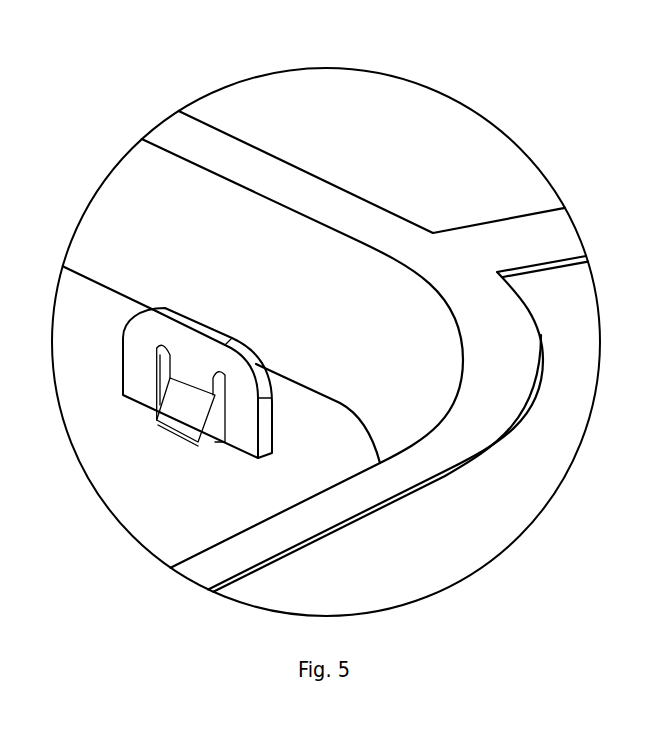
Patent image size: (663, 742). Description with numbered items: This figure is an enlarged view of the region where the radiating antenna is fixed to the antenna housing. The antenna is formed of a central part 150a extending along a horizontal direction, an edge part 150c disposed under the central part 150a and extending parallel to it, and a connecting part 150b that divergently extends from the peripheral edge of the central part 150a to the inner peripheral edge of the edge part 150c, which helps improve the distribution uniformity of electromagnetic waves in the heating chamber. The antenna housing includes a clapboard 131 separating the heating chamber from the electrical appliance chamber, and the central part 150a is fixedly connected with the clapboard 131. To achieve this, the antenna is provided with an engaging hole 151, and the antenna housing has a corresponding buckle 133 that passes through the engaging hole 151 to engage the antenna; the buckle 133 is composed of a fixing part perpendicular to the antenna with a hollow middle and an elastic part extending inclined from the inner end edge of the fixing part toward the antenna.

The clapboard 131 is at (490, 520).
The buckle 133 is at (222, 437).
The central part 150a is at (112, 460).
The connecting part 150b is at (355, 303).
The edge part 150c is at (313, 203).
The engaging hole 151 is at (247, 427).